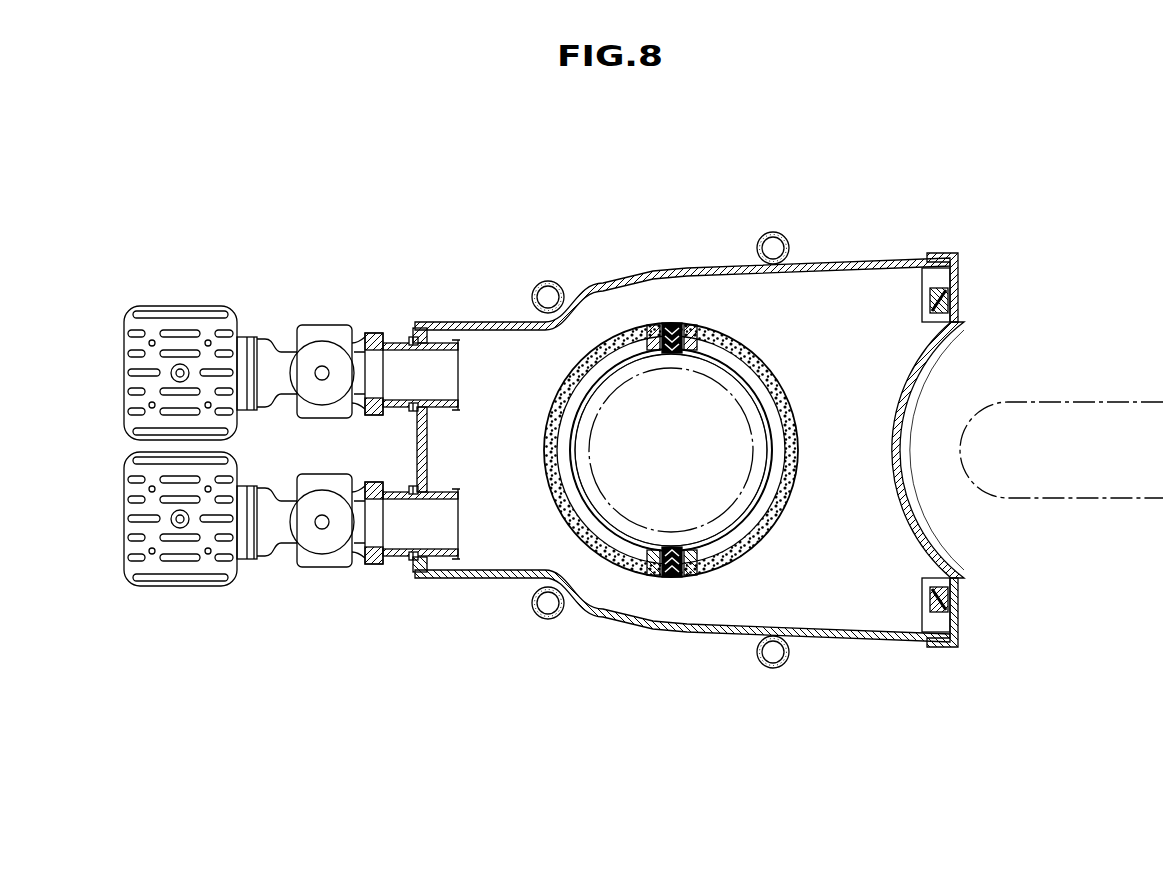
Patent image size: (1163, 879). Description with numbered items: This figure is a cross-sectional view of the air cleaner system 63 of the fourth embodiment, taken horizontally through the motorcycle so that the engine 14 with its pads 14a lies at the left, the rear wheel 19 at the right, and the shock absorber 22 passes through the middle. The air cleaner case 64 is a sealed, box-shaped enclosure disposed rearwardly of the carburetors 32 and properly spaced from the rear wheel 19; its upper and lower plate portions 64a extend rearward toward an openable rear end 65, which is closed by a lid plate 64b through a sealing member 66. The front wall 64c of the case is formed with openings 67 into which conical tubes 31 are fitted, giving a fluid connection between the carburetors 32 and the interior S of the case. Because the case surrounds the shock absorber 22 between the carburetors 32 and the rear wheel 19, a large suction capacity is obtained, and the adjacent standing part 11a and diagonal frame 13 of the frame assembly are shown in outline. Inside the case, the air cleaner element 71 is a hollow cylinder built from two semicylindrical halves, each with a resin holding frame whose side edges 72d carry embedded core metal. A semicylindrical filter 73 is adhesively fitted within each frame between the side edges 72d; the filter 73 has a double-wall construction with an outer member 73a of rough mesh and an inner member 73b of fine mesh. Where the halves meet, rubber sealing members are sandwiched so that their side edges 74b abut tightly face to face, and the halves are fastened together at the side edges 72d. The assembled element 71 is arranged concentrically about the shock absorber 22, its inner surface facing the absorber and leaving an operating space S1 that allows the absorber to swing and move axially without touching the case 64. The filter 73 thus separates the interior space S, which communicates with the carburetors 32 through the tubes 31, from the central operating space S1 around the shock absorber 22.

The engine 14 is at (164, 455).
The pressure pad 14a is at (148, 327).
The carburetors 32 is at (322, 337).
The openings 67 is at (410, 338).
The conical tubes 31 is at (447, 345).
The standing part 11a is at (553, 281).
The diagonal frame 13 is at (788, 237).
The air cleaner system 63 is at (725, 440).
The air cleaner case 64 is at (725, 441).
The plate portion of housing 64a is at (684, 268).
The lid plate 64b is at (903, 393).
The front wall 64c is at (428, 445).
The rear end of the air cleaner 65 is at (960, 313).
The sealing member 66 is at (960, 286).
The air cleaner element 71 is at (714, 446).
The side edges 72d is at (655, 330).
The filter 73 is at (705, 450).
The outer member 73a is at (765, 408).
The inner member 73b is at (787, 415).
The side edges of the rubber sealing member 74b is at (681, 322).
The shock absorber 22 is at (745, 483).
The rear wheel 19 is at (1104, 402).
The interior of the air cleaner case S is at (886, 564).
The operating space S1 is at (637, 530).